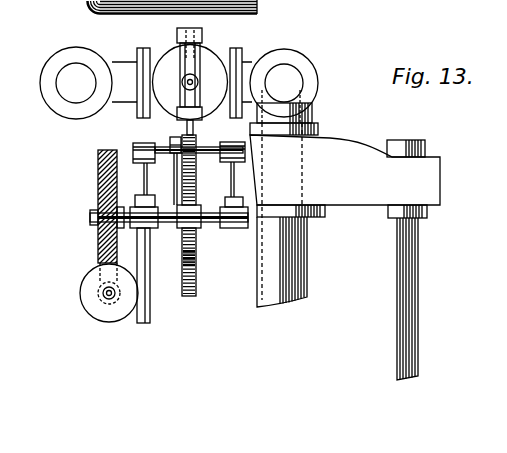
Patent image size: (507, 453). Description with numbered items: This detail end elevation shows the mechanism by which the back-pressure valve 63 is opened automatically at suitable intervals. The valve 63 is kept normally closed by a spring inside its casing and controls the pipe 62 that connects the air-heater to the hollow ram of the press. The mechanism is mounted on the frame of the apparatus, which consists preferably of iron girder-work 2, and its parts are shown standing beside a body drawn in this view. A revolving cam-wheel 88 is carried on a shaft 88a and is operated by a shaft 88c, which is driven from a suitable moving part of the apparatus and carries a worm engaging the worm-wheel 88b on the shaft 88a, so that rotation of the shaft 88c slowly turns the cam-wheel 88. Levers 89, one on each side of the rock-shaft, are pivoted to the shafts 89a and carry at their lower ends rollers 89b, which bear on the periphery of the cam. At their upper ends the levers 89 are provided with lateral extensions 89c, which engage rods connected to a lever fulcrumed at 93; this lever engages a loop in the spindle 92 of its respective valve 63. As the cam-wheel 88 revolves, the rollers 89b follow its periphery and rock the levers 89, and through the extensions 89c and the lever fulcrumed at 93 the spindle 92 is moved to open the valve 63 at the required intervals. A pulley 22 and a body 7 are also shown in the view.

The iron girder-work 2 is at (143, 173).
The frame body 7 is at (298, 193).
The pulley 22 is at (306, 72).
The pipe 62 is at (95, 63).
The back-pressure valve 63 is at (204, 60).
The revolving cam-wheel 88 is at (197, 248).
The shaft 88a is at (91, 222).
The worm-wheel 88b is at (99, 187).
The shaft 88c is at (101, 293).
The levers 89 is at (181, 192).
The shafts 89a is at (220, 148).
The rollers 89b is at (182, 232).
The lateral extensions 89c is at (171, 140).
The spindle 92 is at (198, 82).
The fulcrum 93 is at (189, 75).